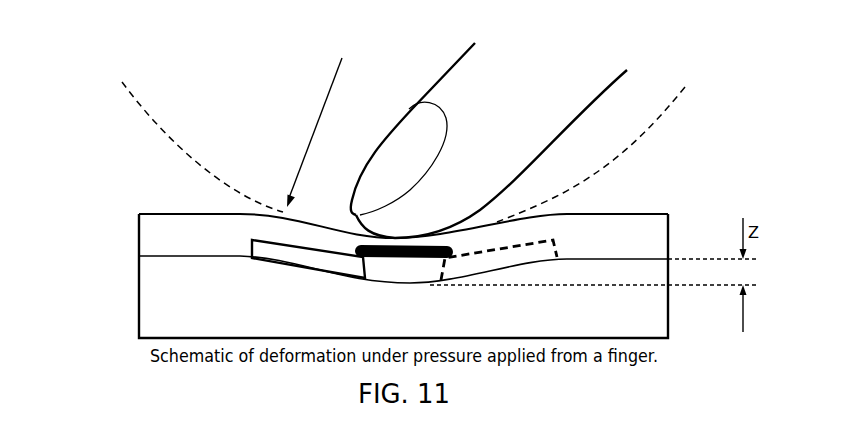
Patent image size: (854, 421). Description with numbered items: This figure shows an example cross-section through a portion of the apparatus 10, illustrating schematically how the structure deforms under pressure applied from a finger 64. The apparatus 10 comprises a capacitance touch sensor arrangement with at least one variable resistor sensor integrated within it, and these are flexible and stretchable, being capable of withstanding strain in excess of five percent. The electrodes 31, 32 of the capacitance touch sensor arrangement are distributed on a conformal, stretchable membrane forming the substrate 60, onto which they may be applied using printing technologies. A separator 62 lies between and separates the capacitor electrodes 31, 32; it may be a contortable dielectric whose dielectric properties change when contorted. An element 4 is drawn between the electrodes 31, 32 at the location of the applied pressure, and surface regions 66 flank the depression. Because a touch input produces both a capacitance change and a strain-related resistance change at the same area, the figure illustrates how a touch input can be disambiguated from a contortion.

The apparatus 10 is at (110, 230).
The pressure sensing element 4 is at (402, 259).
The electrode 31 is at (297, 268).
The electrode 32 is at (510, 266).
The substrate 60 is at (669, 310).
The separator 62 is at (669, 236).
The finger 64 is at (584, 106).
The undeformed surface region 66 is at (178, 214).